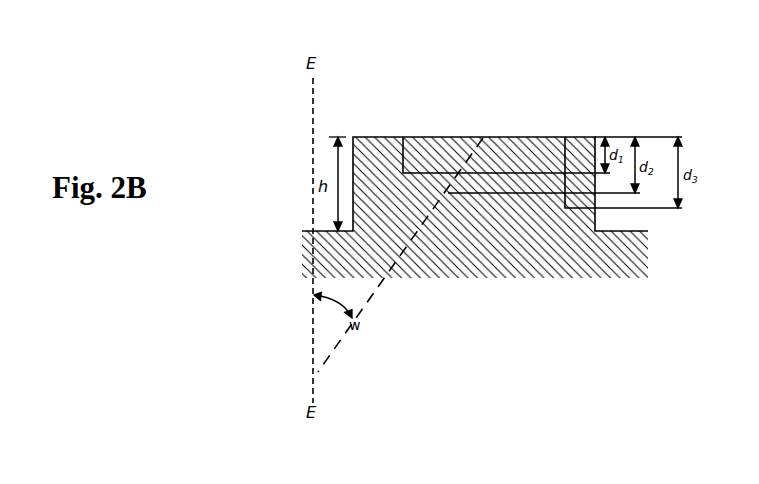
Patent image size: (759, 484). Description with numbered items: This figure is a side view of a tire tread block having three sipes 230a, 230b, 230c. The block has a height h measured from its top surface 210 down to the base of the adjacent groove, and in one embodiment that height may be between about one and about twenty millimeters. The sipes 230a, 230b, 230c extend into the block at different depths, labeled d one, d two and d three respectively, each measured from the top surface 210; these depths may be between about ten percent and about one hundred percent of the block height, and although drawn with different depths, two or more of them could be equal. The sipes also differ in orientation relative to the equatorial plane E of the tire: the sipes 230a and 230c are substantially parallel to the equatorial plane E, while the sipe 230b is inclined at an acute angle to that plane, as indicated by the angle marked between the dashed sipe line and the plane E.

The top surface 210 is at (512, 136).
The sipe 230a is at (402, 137).
The sipe 230b is at (458, 165).
The sipe 230c is at (566, 137).